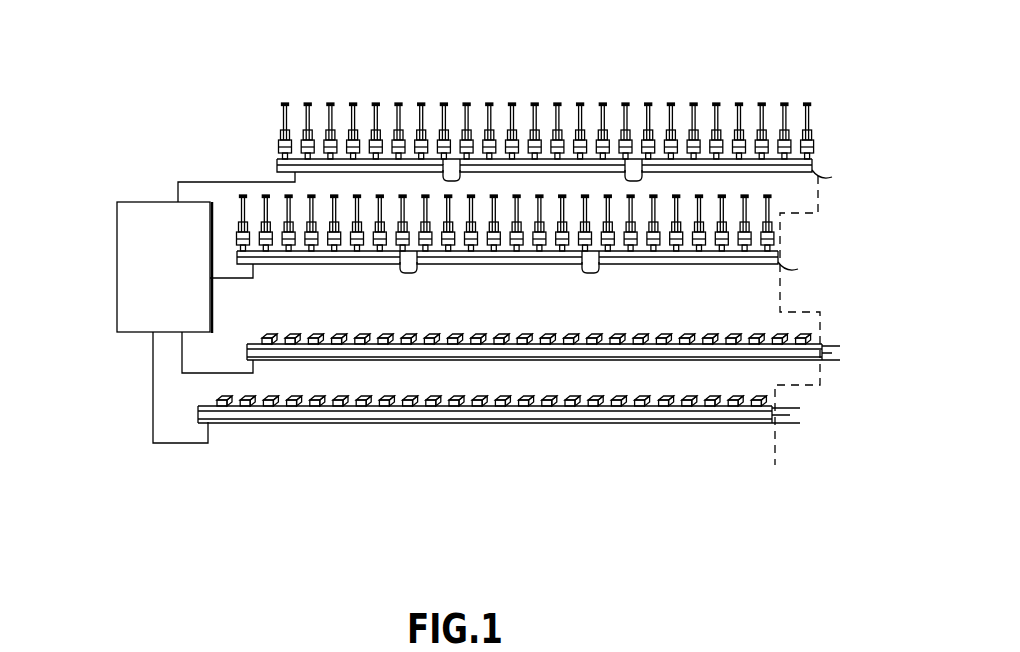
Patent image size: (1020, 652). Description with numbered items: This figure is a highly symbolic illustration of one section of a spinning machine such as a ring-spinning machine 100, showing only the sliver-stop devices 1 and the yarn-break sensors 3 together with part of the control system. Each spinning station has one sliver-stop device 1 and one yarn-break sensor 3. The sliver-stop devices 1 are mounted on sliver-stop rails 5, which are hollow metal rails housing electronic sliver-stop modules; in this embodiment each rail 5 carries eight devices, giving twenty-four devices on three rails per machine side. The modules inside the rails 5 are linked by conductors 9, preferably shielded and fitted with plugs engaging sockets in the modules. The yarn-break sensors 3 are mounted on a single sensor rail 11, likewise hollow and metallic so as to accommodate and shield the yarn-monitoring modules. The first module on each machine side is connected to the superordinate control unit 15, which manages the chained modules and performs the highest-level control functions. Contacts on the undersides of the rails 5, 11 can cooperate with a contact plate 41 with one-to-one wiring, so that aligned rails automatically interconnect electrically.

The ring-spinning machine 100 is at (752, 90).
The sliver-stop device 1 is at (285, 100).
The sliver-stop rail 5 is at (367, 171).
The conductor 9 is at (455, 182).
The yarn-break sensor 3 is at (322, 336).
The sensor rail 11 is at (478, 362).
The superordinate control unit 15 is at (127, 237).
The contact plate 41 is at (826, 362).